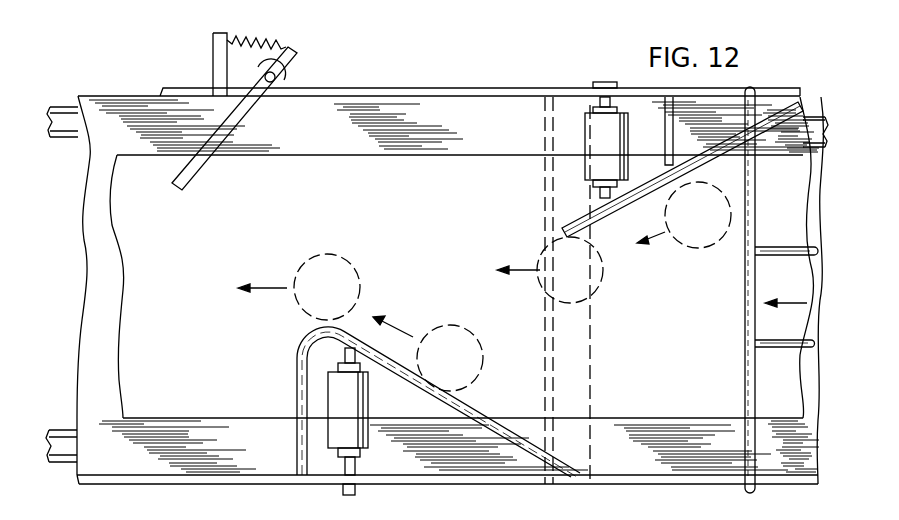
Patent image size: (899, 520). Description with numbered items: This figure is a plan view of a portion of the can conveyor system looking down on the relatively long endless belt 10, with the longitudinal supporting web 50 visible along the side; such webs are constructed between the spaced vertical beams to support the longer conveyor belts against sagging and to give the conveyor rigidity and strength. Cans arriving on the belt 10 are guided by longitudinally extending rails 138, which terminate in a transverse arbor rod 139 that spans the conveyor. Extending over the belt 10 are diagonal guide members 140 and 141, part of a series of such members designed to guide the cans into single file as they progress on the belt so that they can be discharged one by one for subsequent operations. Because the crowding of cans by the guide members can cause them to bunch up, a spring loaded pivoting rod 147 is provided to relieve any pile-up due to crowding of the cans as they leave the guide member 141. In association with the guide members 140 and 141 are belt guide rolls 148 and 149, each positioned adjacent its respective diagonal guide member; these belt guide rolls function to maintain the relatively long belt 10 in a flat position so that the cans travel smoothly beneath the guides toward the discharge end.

The endless belt 10 is at (438, 167).
The longitudinal supporting web 50 is at (98, 303).
The longitudinally extending rail 138 is at (792, 248).
The transverse arbor rod 139 is at (747, 378).
The diagonal guide member 140 is at (621, 204).
The diagonal guide member 141 is at (462, 410).
The spring loaded pivoting rod 147 is at (232, 124).
The belt guide roll 148 is at (612, 143).
The belt guide roll 149 is at (355, 405).